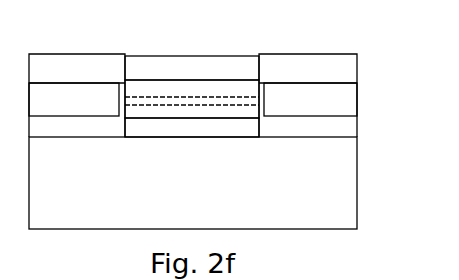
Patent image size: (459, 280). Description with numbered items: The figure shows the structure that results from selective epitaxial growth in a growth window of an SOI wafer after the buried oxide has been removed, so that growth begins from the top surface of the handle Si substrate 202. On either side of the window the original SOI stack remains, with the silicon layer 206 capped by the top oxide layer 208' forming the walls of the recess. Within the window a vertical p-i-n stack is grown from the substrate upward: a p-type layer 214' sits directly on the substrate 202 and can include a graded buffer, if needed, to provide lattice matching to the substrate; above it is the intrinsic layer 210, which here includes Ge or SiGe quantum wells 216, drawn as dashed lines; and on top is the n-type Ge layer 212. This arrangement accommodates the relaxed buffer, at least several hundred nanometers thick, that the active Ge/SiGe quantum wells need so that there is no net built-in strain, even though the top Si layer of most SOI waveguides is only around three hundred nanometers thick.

The Si substrate 202 is at (212, 201).
The silicon layer 206 is at (93, 111).
The top oxide layer 208' is at (193, 95).
The intrinsic Ge layer 210 is at (220, 87).
The n-type Ge layer 212 is at (153, 65).
The p-type layer 214' is at (174, 189).
The quantum wells 216 is at (201, 117).